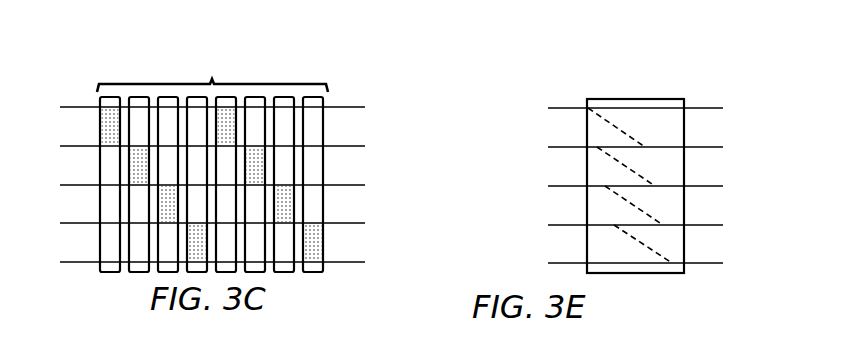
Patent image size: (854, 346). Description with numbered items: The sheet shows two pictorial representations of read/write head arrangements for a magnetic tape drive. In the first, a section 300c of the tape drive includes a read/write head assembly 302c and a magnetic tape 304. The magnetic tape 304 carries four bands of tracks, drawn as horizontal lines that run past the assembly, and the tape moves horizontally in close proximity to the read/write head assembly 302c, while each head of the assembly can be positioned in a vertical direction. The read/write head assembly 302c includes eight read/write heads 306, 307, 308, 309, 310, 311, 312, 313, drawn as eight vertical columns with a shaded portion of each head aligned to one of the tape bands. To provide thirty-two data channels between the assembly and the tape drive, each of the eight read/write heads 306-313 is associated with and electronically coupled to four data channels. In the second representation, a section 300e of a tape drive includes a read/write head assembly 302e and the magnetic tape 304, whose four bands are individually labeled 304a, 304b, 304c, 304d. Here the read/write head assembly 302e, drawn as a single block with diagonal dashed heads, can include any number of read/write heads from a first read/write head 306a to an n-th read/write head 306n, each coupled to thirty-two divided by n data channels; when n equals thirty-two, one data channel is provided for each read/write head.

In FIG. 3C, the section of a magnetic tape drive 300c is at (75, 65).
In FIG. 3C, the read/write head assembly 302c is at (212, 164).
In FIG. 3C, the magnetic tape 304 is at (348, 107).
In FIG. 3E, the magnetic tape 304 is at (702, 107).
In FIG. 3C, the read/write head 306 is at (106, 130).
In FIG. 3C, the read/write head 307 is at (132, 155).
In FIG. 3C, the read/write head 308 is at (166, 195).
In FIG. 3C, the read/write head 309 is at (194, 235).
In FIG. 3C, the read/write head 310 is at (232, 133).
In FIG. 3C, the read/write head 311 is at (262, 175).
In FIG. 3C, the read/write head 312 is at (296, 213).
In FIG. 3C, the read/write head 313 is at (320, 238).
In FIG. 3E, the section of a magnetic tape drive 300e is at (597, 75).
In FIG. 3E, the read/write head assembly 302e is at (635, 98).
In FIG. 3E, the band of magnetic tape 304a is at (730, 126).
In FIG. 3E, the band of magnetic tape 304b is at (730, 165).
In FIG. 3E, the band of magnetic tape 304c is at (730, 209).
In FIG. 3E, the band of magnetic tape 304d is at (730, 249).
In FIG. 3E, the read/write head 306a is at (588, 112).
In FIG. 3E, the read/write head 306n is at (687, 290).